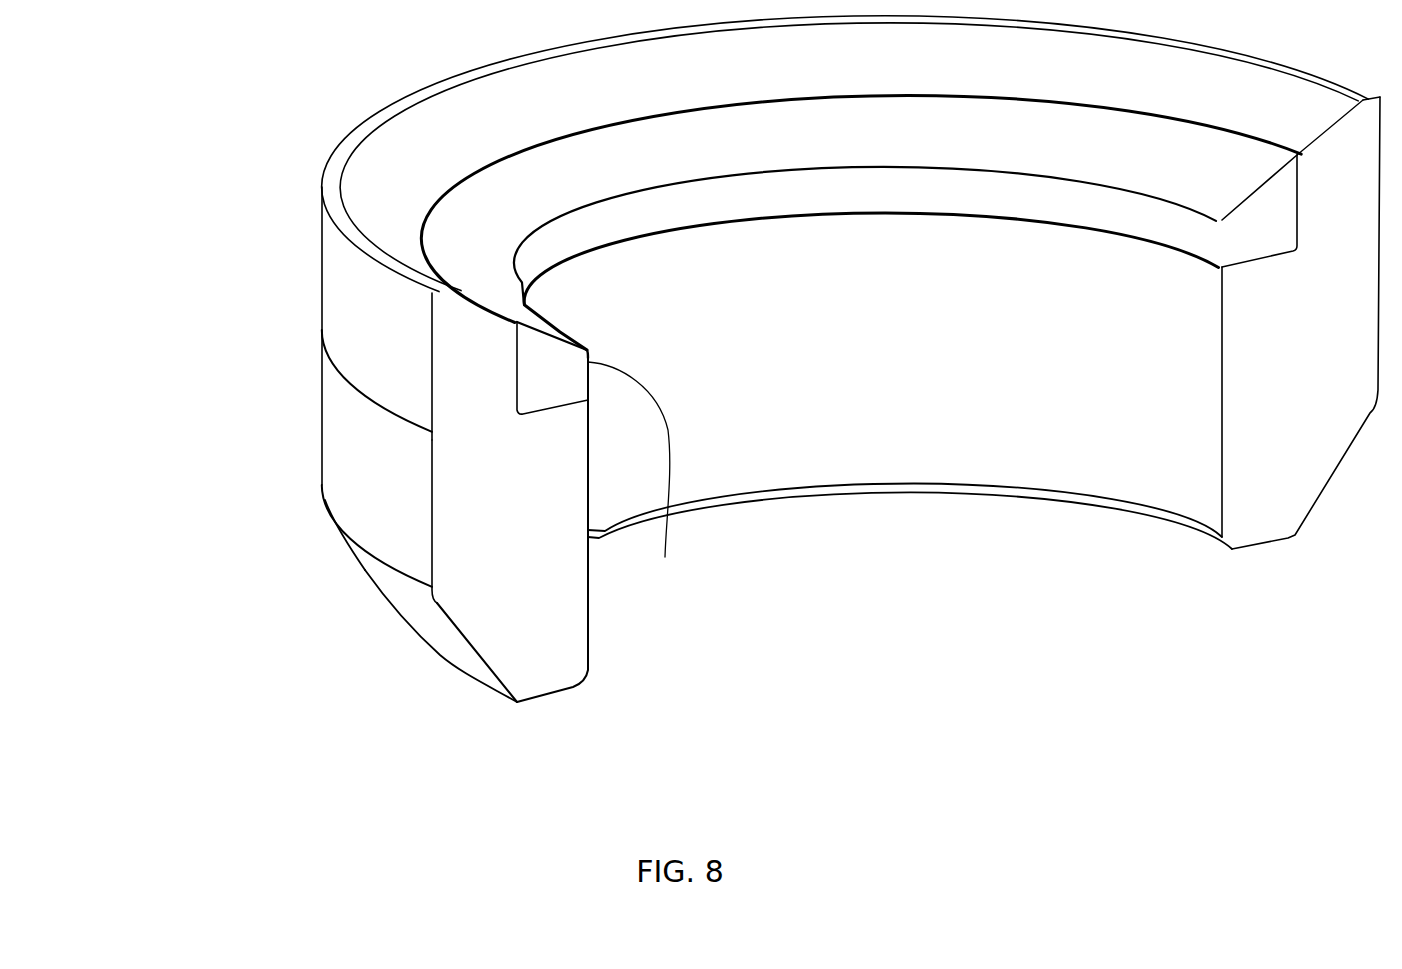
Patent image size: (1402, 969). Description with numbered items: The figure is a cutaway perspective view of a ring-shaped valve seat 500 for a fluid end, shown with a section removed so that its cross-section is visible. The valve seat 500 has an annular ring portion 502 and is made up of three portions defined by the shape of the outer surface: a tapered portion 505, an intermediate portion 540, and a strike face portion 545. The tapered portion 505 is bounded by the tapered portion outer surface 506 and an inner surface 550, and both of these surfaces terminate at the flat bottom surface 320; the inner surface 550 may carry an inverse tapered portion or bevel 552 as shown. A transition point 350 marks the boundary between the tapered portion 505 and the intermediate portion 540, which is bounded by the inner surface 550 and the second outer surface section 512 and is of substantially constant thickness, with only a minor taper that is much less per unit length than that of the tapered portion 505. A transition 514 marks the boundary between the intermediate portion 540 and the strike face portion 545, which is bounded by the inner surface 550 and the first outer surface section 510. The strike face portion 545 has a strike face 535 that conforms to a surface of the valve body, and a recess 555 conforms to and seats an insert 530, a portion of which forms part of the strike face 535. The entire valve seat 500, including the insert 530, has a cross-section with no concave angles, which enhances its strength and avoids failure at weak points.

The valve seat 500 is at (248, 219).
The annular ring portion 502 is at (1192, 434).
The tapered portion 505 is at (481, 684).
The tapered portion outer surface 506 is at (465, 652).
The first outer surface section 510 is at (342, 303).
The second outer surface section 512 is at (363, 452).
The transition 514 is at (362, 392).
The insert 530 is at (1138, 173).
The strike face 535 is at (418, 184).
The intermediate portion 540 is at (420, 507).
The strike face portion 545 is at (588, 361).
The inner surface 550 is at (707, 458).
The inverse tapered portion or bevel 552 is at (893, 494).
The recess 555 is at (599, 457).
The flat bottom surface 320 is at (543, 697).
The transition point 350 is at (402, 582).